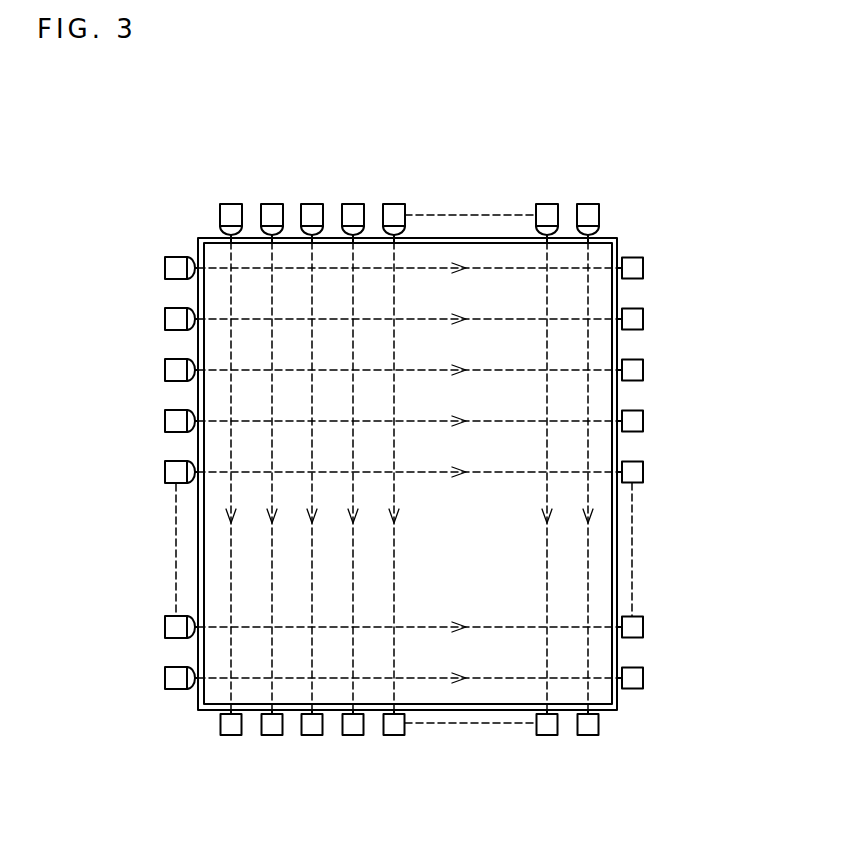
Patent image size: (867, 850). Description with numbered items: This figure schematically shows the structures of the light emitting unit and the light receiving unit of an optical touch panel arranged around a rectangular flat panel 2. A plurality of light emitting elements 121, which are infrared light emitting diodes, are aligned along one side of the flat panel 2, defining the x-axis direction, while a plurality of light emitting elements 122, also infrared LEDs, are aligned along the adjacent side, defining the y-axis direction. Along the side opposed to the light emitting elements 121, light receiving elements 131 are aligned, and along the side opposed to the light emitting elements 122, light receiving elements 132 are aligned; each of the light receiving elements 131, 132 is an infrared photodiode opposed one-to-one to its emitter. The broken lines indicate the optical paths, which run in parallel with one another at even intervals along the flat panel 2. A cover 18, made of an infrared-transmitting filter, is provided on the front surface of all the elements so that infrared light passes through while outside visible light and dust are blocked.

The flat panel 2 is at (475, 690).
The cover 18 is at (611, 237).
The light emitting elements 121 is at (231, 203).
The light emitting elements 122 is at (164, 268).
The light receiving elements 131 is at (232, 736).
The light receiving elements 132 is at (645, 268).